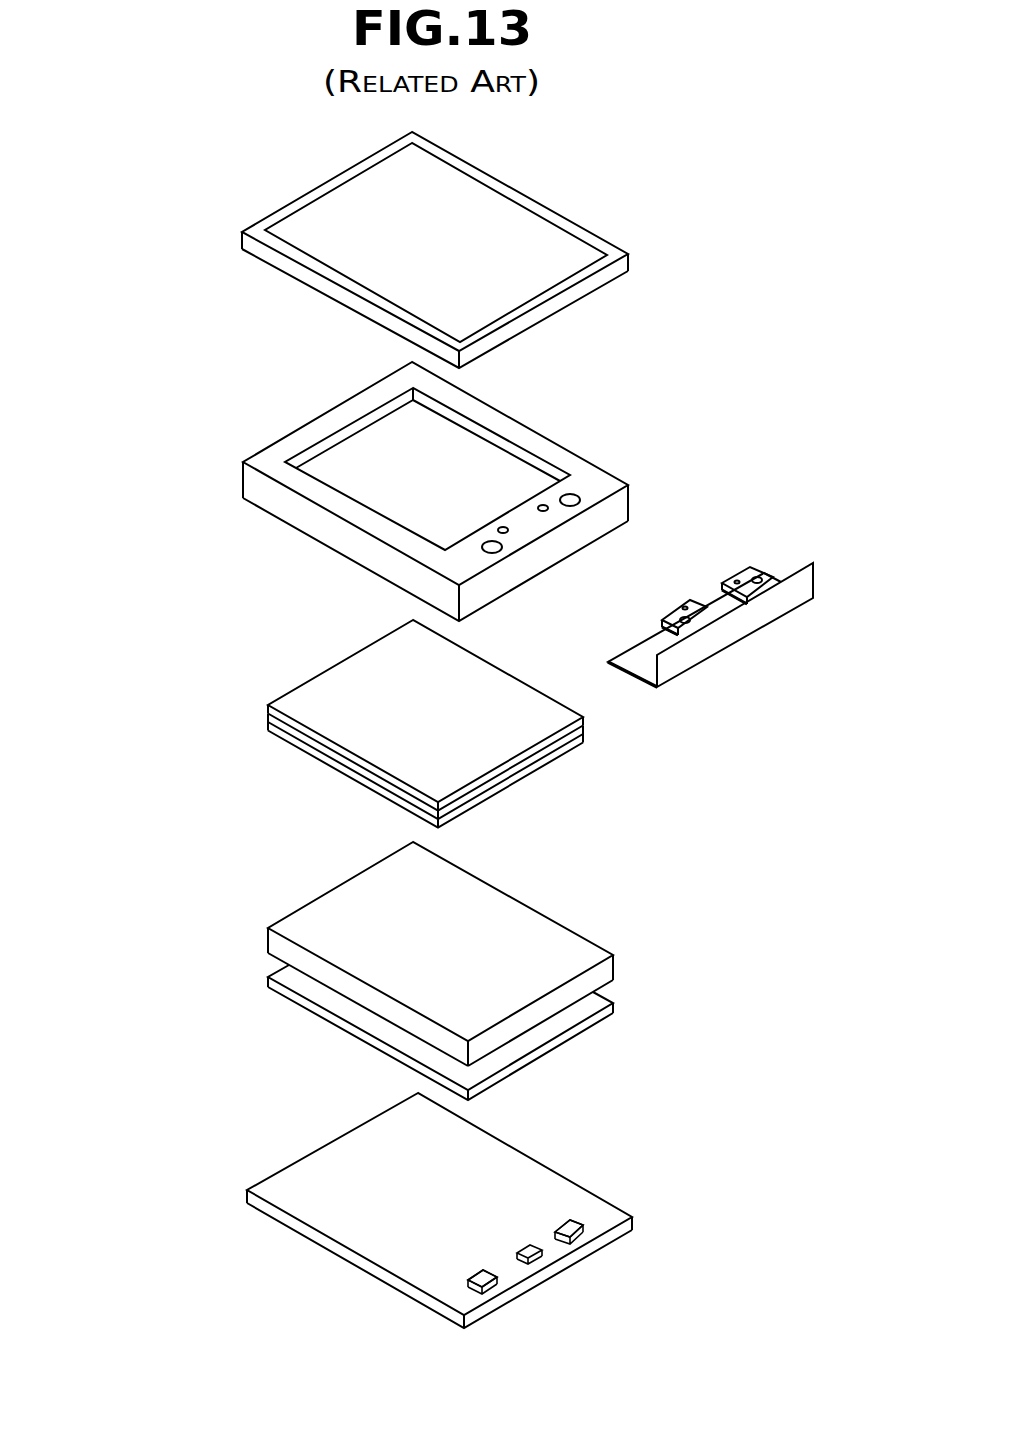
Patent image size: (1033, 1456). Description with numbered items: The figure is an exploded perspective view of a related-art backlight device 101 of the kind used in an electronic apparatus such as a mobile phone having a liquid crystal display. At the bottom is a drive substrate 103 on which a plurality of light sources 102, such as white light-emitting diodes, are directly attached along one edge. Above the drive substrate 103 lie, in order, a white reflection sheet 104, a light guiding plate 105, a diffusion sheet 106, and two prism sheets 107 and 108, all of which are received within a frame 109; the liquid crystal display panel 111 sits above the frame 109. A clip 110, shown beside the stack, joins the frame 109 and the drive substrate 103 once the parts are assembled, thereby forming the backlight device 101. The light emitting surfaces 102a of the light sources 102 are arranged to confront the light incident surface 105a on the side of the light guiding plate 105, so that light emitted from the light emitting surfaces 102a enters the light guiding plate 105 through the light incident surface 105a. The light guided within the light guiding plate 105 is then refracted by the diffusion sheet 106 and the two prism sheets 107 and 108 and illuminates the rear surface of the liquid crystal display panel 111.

The backlight device 101 is at (242, 1116).
The light sources 102 is at (570, 1238).
The light emitting surfaces 102a is at (478, 1276).
The drive substrate 103 is at (383, 1283).
The reflection sheet 104 is at (337, 1015).
The light guiding plate 105 is at (287, 920).
The light incident surface 105a is at (607, 968).
The diffusion sheet 106 is at (295, 743).
The prism sheet 107 is at (283, 722).
The prism sheet 108 is at (317, 690).
The frame 109 is at (330, 427).
The clip 110 is at (717, 655).
The liquid crystal display panel 111 is at (347, 175).